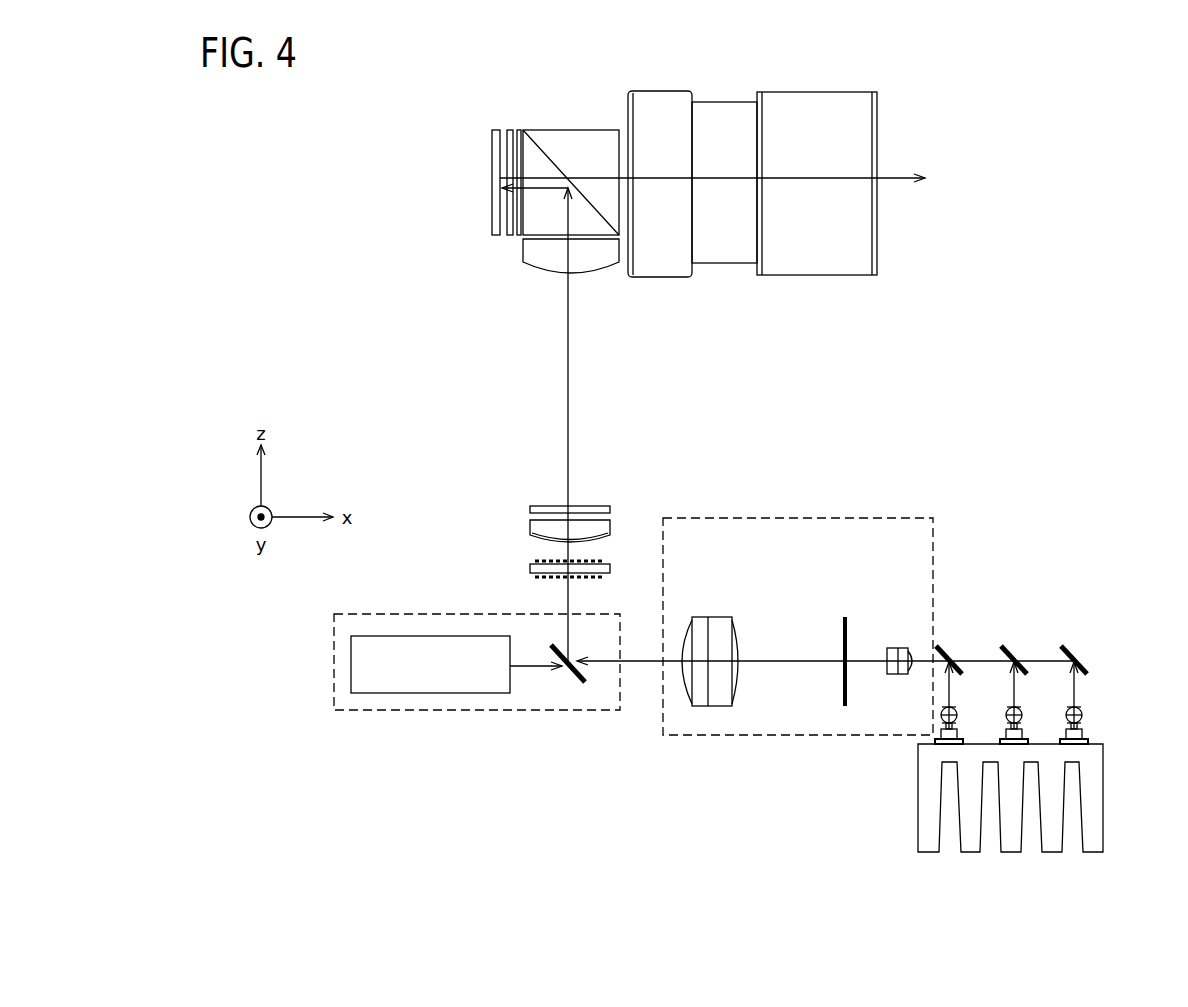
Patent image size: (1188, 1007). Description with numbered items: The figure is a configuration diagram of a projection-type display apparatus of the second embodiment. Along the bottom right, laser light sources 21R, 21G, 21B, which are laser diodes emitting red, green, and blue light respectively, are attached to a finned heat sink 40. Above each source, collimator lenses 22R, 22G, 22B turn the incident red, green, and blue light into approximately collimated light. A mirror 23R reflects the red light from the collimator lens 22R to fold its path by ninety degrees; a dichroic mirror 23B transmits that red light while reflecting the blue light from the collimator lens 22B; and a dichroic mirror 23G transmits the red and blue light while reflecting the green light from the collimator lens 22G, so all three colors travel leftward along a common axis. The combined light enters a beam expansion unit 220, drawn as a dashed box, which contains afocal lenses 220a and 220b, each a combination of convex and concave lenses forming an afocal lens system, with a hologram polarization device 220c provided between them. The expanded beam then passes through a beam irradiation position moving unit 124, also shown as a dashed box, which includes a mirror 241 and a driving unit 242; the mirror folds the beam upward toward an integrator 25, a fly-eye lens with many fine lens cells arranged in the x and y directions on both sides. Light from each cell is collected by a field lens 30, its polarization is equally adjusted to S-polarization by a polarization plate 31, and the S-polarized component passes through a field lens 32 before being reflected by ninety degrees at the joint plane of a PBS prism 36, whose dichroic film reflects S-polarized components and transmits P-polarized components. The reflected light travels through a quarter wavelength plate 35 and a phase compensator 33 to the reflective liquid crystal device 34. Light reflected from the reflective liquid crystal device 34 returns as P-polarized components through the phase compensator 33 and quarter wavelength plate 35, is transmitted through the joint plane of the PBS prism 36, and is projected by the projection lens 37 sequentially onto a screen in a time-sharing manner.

The reflective liquid crystal device 34 is at (492, 157).
The phase compensator 33 is at (510, 130).
The quarter wavelength plate 35 is at (519, 130).
The PBS prism 36 is at (608, 207).
The field lens 32 is at (528, 255).
The projection lens 37 is at (727, 105).
The polarization plate 31 is at (530, 508).
The field lens 30 is at (530, 525).
The integrator 25 is at (530, 568).
The beam irradiation position moving unit 124 is at (383, 712).
The driving unit 242 is at (466, 695).
The mirror 241 is at (573, 685).
The beam expansion unit 220 is at (840, 517).
The afocal lens 220b is at (718, 707).
The hologram polarization device 220c is at (845, 616).
The afocal lens 220a is at (898, 647).
The dichroic mirror 23G is at (956, 648).
The collimator lens 22G is at (940, 715).
The laser light source 21G is at (937, 738).
The dichroic mirror 23B is at (1019, 648).
The collimator lens 22B is at (1023, 712).
The laser light source 21B is at (1000, 738).
The mirror 23R is at (1081, 650).
The collimator lens 22R is at (1083, 715).
The laser light source 21R is at (1083, 736).
The heat sink 40 is at (1013, 838).